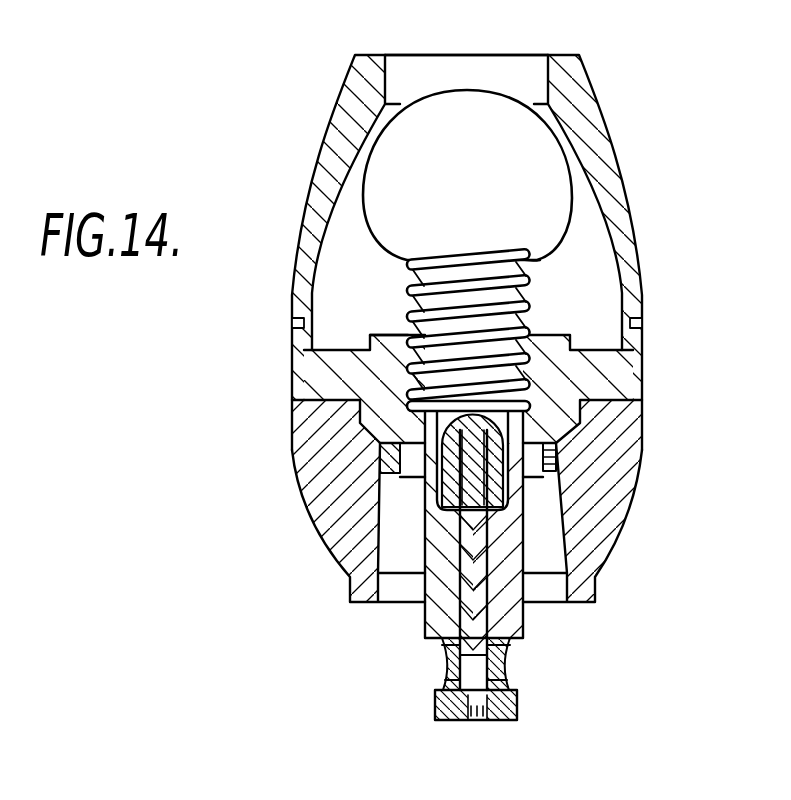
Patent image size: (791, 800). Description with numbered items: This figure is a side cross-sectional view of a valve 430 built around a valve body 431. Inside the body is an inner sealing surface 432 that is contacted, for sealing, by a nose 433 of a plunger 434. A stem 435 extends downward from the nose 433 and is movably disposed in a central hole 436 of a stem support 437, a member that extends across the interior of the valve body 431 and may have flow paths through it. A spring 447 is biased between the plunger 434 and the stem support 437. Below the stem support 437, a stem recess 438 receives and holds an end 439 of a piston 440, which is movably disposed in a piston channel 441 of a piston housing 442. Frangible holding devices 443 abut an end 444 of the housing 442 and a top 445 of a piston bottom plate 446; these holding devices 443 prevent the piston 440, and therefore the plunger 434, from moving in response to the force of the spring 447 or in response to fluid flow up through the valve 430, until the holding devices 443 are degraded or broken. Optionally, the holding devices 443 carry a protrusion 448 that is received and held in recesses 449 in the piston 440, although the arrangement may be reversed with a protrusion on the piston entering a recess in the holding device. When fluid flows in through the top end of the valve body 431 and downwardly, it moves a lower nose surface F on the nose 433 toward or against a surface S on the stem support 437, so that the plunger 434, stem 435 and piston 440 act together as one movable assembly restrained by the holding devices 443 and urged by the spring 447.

The valve 430 is at (322, 129).
The valve body 431 is at (603, 150).
The inner sealing surface 432 is at (550, 125).
The nose 433 is at (385, 164).
The plunger 434 is at (542, 260).
The stem 435 is at (502, 330).
The central hole 436 is at (478, 450).
The stem support 437 is at (322, 369).
The stem recess 438 is at (400, 448).
The end 439 is at (552, 456).
The piston 440 is at (392, 526).
The piston channel 441 is at (500, 545).
The piston housing 442 is at (510, 592).
The frangible holding devices 443 is at (442, 651).
The end 444 is at (505, 656).
The top 445 is at (508, 697).
The piston bottom plate 446 is at (442, 686).
The spring 447 is at (410, 298).
The protrusion 448 is at (492, 706).
The recesses 449 is at (456, 704).
The lower nose surface F is at (390, 254).
The surface S is at (405, 345).